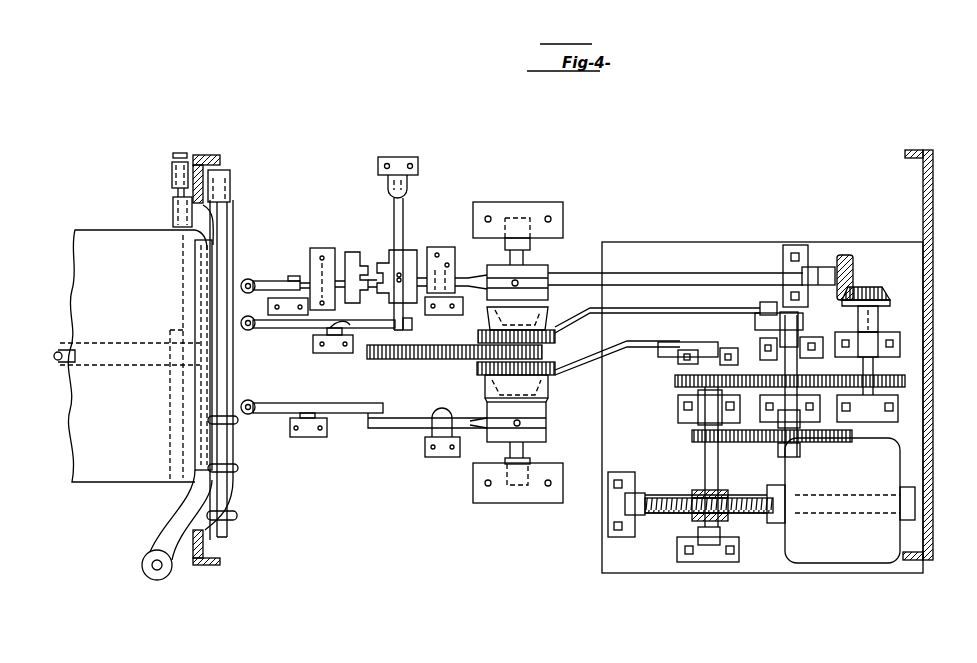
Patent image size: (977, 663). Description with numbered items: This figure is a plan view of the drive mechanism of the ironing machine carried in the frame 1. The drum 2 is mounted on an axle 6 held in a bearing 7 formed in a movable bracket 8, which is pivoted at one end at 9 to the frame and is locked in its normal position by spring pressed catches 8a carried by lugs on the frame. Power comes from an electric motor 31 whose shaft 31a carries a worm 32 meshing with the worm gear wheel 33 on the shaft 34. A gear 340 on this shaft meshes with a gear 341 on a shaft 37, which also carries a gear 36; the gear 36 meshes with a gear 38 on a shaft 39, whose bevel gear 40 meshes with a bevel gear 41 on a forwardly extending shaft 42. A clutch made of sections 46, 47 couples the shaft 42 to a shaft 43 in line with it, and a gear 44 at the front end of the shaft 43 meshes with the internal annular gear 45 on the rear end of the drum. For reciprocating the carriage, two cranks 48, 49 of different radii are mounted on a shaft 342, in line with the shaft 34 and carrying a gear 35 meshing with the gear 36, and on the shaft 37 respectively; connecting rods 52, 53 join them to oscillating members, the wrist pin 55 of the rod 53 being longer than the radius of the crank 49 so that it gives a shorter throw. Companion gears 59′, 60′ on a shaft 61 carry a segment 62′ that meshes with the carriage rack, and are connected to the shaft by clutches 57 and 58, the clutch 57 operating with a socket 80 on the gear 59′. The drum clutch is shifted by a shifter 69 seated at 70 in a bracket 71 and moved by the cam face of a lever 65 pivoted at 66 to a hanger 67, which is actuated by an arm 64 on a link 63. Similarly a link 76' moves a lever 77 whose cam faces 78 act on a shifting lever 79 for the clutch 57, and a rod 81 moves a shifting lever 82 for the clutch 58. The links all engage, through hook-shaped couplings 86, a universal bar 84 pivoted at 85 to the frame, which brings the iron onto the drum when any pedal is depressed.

The frame 1 is at (207, 157).
The drum 2 is at (72, 406).
The axle 6 is at (52, 352).
The bearing 7 is at (213, 357).
The movable bracket 8 is at (170, 513).
The spring pressed catch 8a is at (170, 157).
The pivot 9 is at (152, 572).
The electric motor 31 is at (858, 530).
The motor shaft 31a is at (760, 500).
The worm 32 is at (695, 514).
The worm gear wheel 33 is at (668, 498).
The shaft 34 is at (720, 460).
The gear 35 is at (675, 383).
The gear 36 is at (800, 387).
The shaft 37 is at (785, 368).
The gear 38 is at (905, 380).
The shaft 39 is at (880, 364).
The bevel gear 40 is at (870, 290).
The bevel gear 41 is at (850, 256).
The shaft 42 is at (705, 273).
The shaft 43 is at (256, 280).
The gear 44 is at (207, 265).
The internal annular gear 45 is at (195, 432).
The clutch section 46 is at (387, 295).
The clutch section 47 is at (350, 252).
The crank 48 is at (688, 343).
The crank 49 is at (755, 320).
The connecting rod 52 is at (608, 345).
The connecting rod 53 is at (640, 309).
The wrist pin 55 is at (487, 327).
The clutch 57 is at (548, 415).
The clutch 58 is at (548, 300).
The gear 59′ is at (555, 372).
The gear 60′ is at (556, 336).
The shaft 61 is at (530, 448).
The segment 62′ is at (387, 360).
The rod or link 63 is at (233, 428).
The arm 64 is at (255, 290).
The lever 65 is at (275, 330).
The pivot 66 is at (345, 320).
The support or hanger 67 is at (313, 343).
The shifter 69 is at (404, 210).
The pivot 70 is at (408, 183).
The bracket 71 is at (418, 160).
The link 76' is at (263, 446).
The lever 77 is at (333, 403).
The cam faces 78 is at (395, 416).
The shifting lever 79 is at (416, 430).
The clutch section or socket 80 is at (485, 385).
The rod 81 is at (236, 472).
The shifting lever 82 is at (290, 277).
The universal bar 84 is at (222, 458).
The pivot 85 is at (232, 185).
The hook-shaped coupling 86 is at (208, 418).
The gear 340 is at (692, 435).
The gear 341 is at (840, 445).
The shaft 342 is at (685, 372).